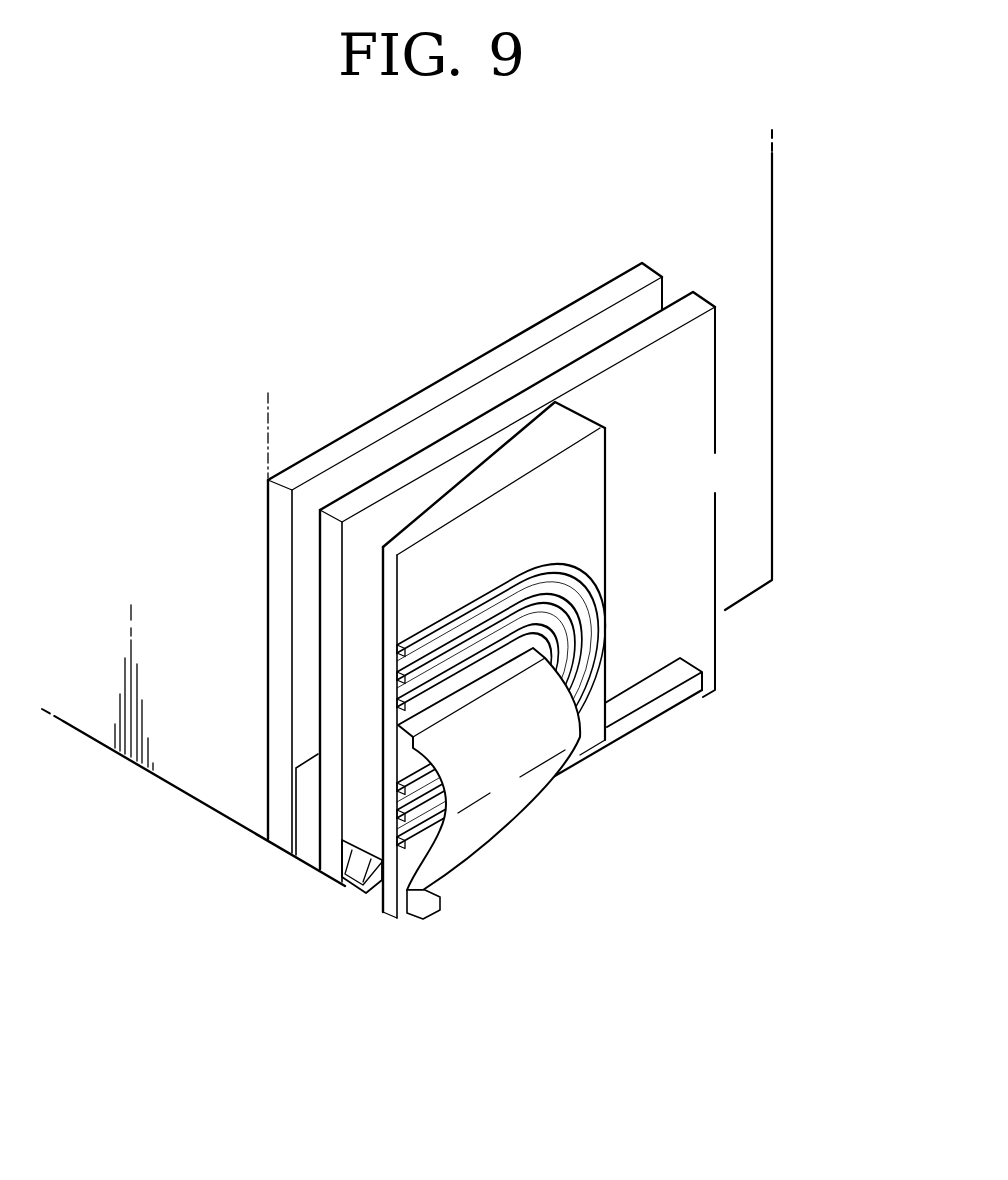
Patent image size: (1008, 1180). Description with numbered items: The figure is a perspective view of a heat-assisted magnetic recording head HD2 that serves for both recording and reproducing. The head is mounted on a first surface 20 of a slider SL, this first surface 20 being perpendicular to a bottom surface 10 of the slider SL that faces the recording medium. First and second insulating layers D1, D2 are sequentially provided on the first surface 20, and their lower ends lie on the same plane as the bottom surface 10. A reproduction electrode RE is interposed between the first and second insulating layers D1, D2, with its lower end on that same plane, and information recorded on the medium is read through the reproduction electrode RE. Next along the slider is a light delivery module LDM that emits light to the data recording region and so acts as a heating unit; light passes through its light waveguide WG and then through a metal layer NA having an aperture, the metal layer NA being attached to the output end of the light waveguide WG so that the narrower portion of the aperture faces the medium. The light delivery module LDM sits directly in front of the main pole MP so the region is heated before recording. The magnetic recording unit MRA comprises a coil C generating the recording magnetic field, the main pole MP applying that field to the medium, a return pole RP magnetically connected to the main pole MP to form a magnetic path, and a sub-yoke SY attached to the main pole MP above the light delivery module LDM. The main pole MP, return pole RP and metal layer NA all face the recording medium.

The bottom surface 10 is at (188, 797).
The first surface 20 is at (795, 370).
The slider SL is at (776, 201).
The HAMR head HD2 is at (463, 590).
The first insulating layer D1 is at (277, 839).
The second insulating layer D2 is at (323, 873).
The reproduction electrode RE is at (307, 853).
The light waveguide WG is at (658, 712).
The metal layer NA is at (362, 893).
The light delivery module LDM is at (309, 923).
The magnetic recording unit MRA is at (558, 683).
The sub-yoke SY is at (570, 420).
The main pole MP is at (657, 574).
The coil C is at (583, 580).
The return pole RP is at (563, 708).